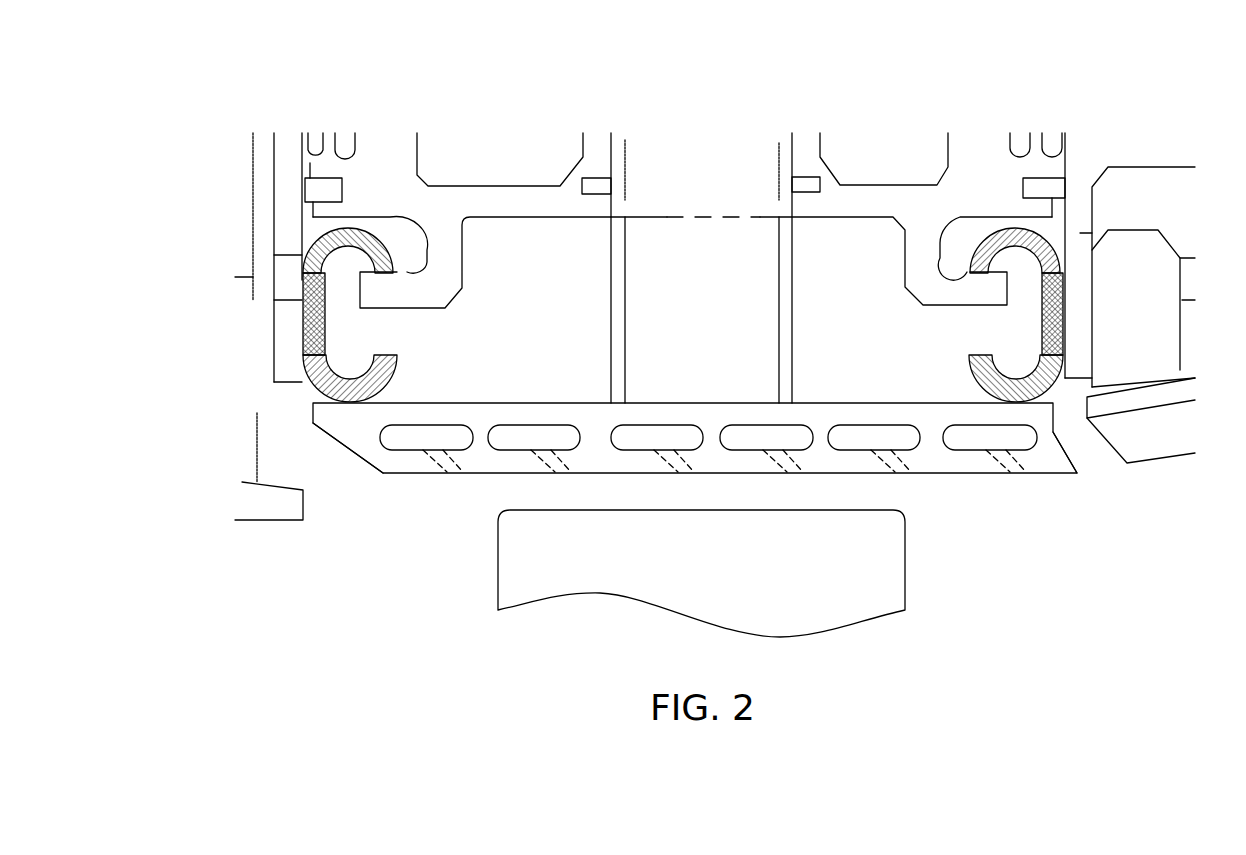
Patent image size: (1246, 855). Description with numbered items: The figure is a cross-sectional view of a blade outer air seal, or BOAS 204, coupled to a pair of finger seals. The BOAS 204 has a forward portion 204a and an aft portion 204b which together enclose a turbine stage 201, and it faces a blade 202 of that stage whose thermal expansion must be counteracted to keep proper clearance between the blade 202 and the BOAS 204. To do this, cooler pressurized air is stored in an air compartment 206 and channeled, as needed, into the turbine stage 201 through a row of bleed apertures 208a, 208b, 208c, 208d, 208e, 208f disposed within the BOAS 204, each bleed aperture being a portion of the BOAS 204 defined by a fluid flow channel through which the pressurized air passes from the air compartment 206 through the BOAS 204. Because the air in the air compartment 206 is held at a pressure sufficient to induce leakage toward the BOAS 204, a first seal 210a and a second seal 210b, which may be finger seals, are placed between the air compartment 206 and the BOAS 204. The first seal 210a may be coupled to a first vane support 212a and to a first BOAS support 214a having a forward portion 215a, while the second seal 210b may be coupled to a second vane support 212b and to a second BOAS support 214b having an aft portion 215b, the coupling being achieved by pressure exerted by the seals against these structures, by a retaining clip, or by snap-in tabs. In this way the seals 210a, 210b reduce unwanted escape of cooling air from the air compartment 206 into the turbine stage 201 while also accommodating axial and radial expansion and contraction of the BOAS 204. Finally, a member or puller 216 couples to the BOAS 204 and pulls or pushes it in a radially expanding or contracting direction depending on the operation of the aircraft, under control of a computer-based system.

The turbine stage 201 is at (479, 578).
The blade 202 is at (905, 570).
The BOAS 204 is at (1050, 456).
The forward portion 204a is at (343, 423).
The aft portion 204b is at (1057, 450).
The air compartment 206 is at (1130, 264).
The bleed aperture 208a is at (400, 440).
The bleed aperture 208b is at (503, 437).
The bleed aperture 208c is at (630, 437).
The bleed aperture 208d is at (740, 437).
The bleed aperture 208e is at (850, 437).
The bleed aperture 208f is at (963, 437).
The first seal 210a is at (366, 236).
The second seal 210b is at (997, 234).
The first vane support 212a is at (290, 333).
The second vane support 212b is at (1080, 330).
The first BOAS support 214a is at (498, 200).
The second BOAS support 214b is at (865, 200).
The forward portion 215a is at (425, 280).
The aft portion 215b is at (937, 288).
The puller 216 is at (775, 120).